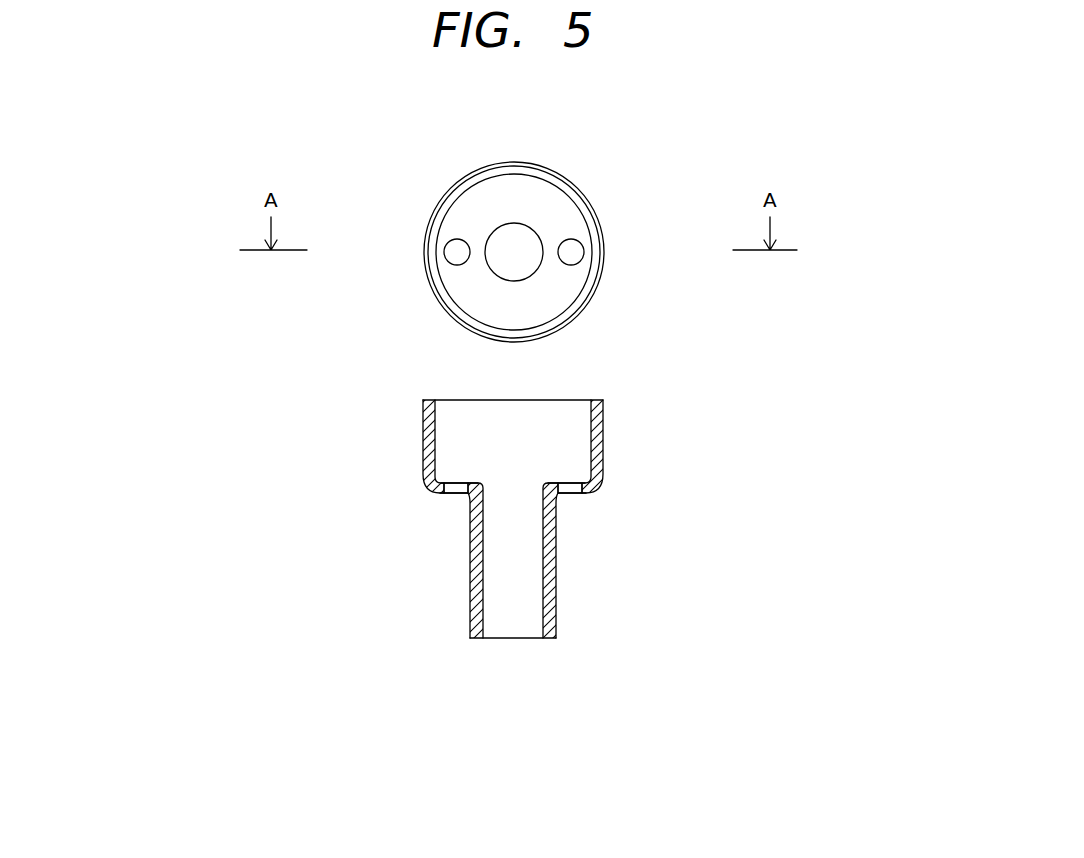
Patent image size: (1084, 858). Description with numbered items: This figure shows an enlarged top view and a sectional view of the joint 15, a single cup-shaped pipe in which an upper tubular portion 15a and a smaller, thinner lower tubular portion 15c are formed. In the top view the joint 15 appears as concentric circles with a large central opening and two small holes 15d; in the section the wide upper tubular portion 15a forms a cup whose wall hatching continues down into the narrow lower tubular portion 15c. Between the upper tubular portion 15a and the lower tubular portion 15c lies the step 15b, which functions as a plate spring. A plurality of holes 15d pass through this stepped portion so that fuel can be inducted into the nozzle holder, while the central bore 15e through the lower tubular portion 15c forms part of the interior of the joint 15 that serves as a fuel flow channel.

The joint 15 is at (597, 202).
The upper tubular portion 15a is at (603, 225).
The step 15b is at (565, 293).
The lower tubular portion 15c is at (555, 598).
The holes 15d is at (458, 252).
The central hole 15e is at (523, 238).